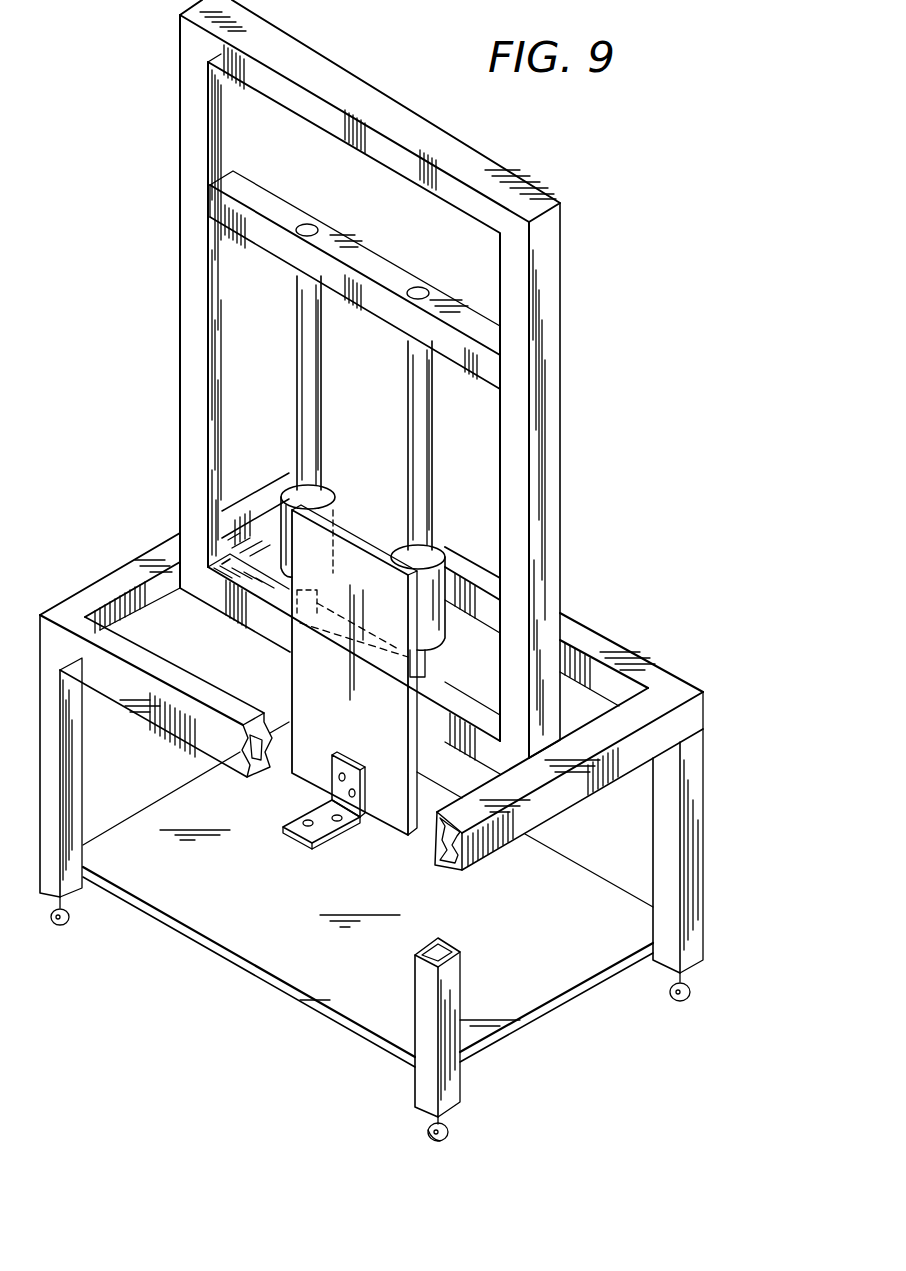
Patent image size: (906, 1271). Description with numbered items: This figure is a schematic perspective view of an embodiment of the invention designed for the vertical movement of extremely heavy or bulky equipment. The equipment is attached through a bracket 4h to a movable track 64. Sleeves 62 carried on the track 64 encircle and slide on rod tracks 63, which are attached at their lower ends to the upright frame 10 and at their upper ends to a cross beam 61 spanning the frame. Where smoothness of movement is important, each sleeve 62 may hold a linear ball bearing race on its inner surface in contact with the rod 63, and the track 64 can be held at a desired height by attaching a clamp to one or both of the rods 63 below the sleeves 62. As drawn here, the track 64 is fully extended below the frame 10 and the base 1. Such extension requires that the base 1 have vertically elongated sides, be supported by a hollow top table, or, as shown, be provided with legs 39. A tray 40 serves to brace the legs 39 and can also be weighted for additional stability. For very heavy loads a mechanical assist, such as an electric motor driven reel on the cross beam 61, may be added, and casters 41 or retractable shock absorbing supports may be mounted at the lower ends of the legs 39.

The base 1 is at (635, 652).
The frame 10 is at (566, 448).
The legs 39 is at (703, 880).
The tray 40 is at (298, 966).
The casters 41 is at (450, 1133).
The bracket 4h is at (330, 827).
The cross beam 61 is at (408, 284).
The sleeves 62 is at (283, 492).
The rod tracks 63 is at (408, 412).
The movable track 64 is at (306, 681).